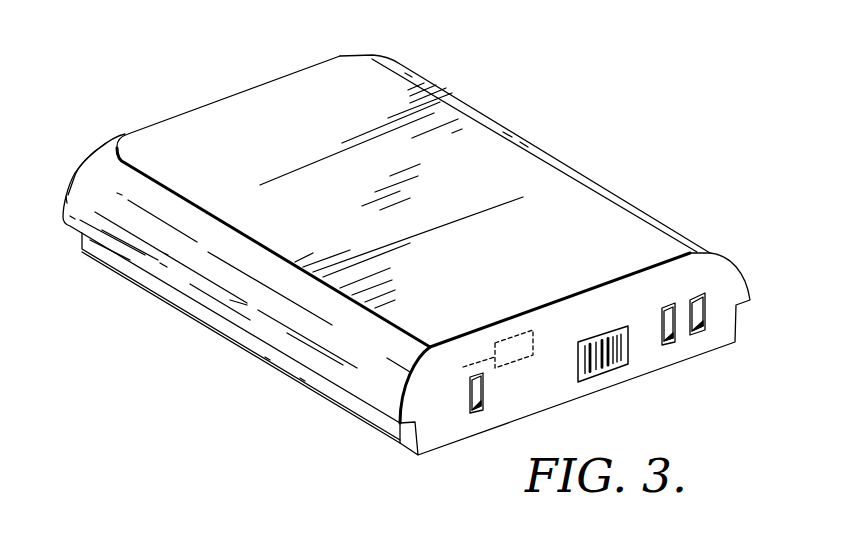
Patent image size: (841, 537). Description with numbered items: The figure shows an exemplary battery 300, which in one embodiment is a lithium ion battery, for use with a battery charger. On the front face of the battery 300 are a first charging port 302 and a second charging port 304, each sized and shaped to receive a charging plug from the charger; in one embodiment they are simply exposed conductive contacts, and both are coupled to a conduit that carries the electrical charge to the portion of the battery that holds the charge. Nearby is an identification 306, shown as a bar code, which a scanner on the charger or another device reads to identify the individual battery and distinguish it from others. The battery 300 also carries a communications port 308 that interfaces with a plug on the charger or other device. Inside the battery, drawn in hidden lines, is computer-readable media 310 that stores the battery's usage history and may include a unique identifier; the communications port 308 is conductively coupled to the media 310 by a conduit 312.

The battery 300 is at (503, 124).
The first charging port 302 is at (700, 335).
The second charging port 304 is at (670, 347).
The identification 306 is at (603, 382).
The communications port 308 is at (480, 415).
The computer-readable media 310 is at (516, 333).
The conduit 312 is at (466, 362).